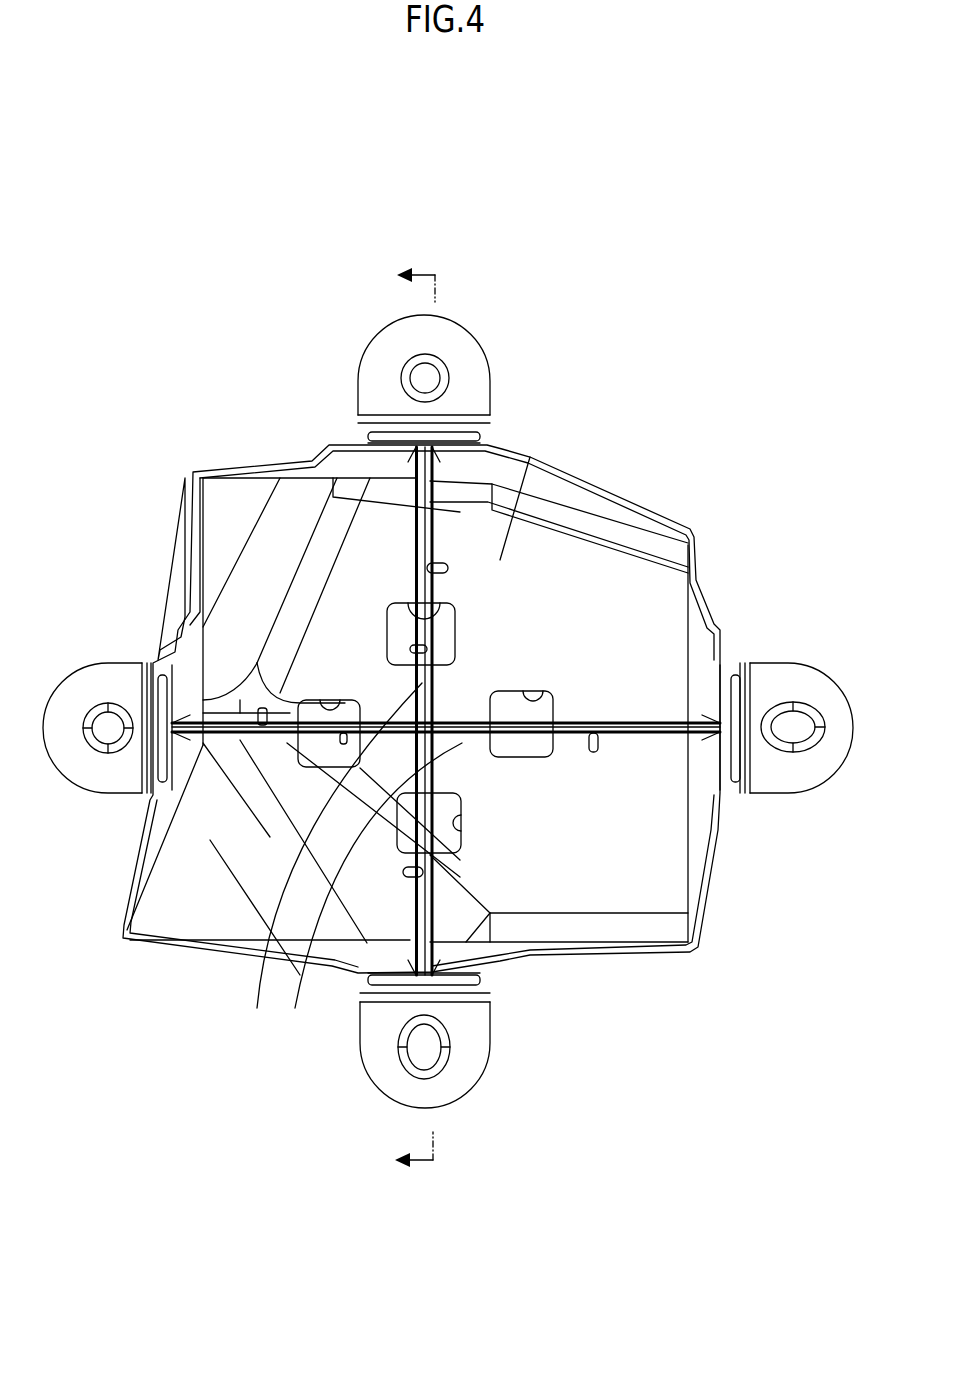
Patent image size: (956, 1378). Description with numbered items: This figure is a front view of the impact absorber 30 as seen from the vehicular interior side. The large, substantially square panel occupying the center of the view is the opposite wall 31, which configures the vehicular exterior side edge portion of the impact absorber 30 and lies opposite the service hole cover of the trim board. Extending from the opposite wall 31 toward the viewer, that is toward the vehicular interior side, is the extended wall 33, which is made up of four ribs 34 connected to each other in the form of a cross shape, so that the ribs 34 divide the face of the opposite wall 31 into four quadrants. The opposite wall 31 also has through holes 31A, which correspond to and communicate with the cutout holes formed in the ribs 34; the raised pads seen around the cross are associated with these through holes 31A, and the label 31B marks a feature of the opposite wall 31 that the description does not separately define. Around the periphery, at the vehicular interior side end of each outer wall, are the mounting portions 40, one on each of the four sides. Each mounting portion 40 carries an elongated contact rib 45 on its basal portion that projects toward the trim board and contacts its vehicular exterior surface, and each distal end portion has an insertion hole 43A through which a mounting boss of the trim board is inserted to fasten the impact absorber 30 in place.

The impact absorber 30 is at (236, 381).
The opposite wall 31 is at (610, 580).
The through hole 31A is at (333, 703).
The upper seat portion 31B is at (440, 612).
The extended wall 33 is at (318, 1034).
The rib 34 is at (352, 861).
The mounting portion 40 is at (370, 405).
The insertion hole 43A is at (413, 378).
The contact rib 45 is at (393, 437).